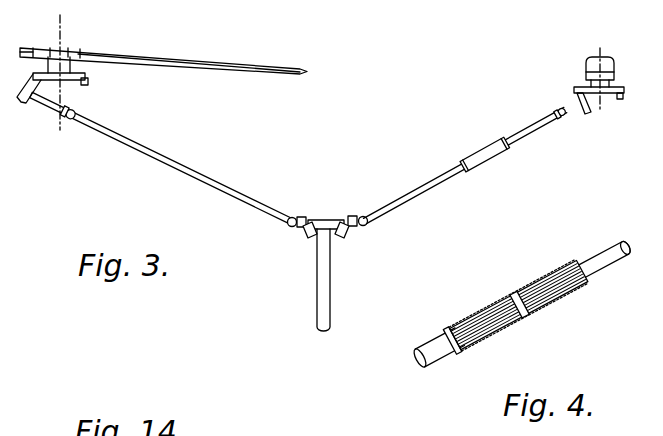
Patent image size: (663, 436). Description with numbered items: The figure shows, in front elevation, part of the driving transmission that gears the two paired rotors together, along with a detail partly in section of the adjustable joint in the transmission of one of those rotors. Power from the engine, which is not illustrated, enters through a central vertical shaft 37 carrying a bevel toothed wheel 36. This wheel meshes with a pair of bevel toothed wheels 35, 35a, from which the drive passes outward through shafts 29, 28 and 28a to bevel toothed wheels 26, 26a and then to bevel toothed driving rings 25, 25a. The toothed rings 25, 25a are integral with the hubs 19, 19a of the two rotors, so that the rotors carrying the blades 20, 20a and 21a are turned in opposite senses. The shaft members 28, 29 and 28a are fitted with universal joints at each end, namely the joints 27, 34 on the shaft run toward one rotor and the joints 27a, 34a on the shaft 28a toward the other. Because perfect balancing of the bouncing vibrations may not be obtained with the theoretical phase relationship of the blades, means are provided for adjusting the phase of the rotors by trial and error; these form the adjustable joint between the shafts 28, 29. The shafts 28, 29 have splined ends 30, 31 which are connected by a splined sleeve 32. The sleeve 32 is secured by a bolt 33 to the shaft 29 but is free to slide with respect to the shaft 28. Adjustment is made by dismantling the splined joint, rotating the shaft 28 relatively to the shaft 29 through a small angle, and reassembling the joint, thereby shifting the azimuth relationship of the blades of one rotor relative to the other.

In FIG. 3, the hub 19 is at (588, 81).
In FIG. 3, the hub 19a is at (62, 62).
In FIG. 3, the rotor blade 20 is at (605, 63).
In FIG. 3, the rotor blade 20a is at (190, 58).
In FIG. 3, the rotor blade 21a is at (34, 49).
In FIG. 3, the bevel toothed driving ring 25 is at (620, 100).
In FIG. 3, the bevel toothed driving ring 25a is at (86, 82).
In FIG. 3, the bevel toothed wheel 26 is at (587, 115).
In FIG. 3, the bevel toothed wheel 26a is at (21, 102).
In FIG. 3, the universal joint 27 is at (560, 110).
In FIG. 3, the universal joint 27a is at (75, 119).
In FIG. 3, the shaft 28 is at (515, 141).
In FIG. 4, the shaft 28 is at (600, 255).
In FIG. 3, the shaft 28a is at (193, 166).
In FIG. 3, the shaft 29 is at (435, 183).
In FIG. 4, the shaft 29 is at (438, 350).
In FIG. 4, the splined end 30 is at (552, 303).
In FIG. 4, the splined end 31 is at (492, 323).
In FIG. 4, the splined sleeve 32 is at (515, 292).
In FIG. 4, the bolt 33 is at (443, 323).
In FIG. 3, the universal joint 34 is at (368, 224).
In FIG. 3, the universal joint 34a is at (288, 224).
In FIG. 3, the bevel toothed wheel 35 is at (347, 237).
In FIG. 3, the bevel toothed wheel 35a is at (303, 237).
In FIG. 3, the bevel toothed wheel 36 is at (321, 219).
In FIG. 3, the central vertical shaft 37 is at (322, 287).